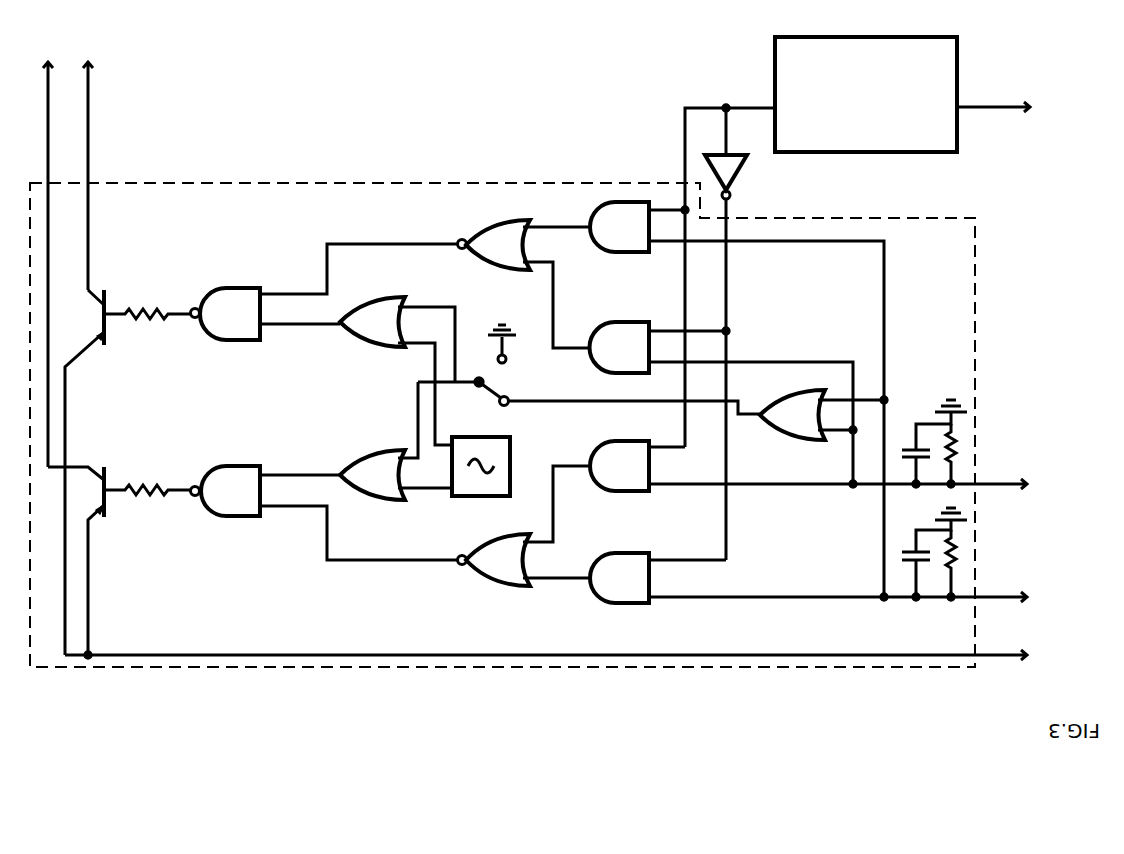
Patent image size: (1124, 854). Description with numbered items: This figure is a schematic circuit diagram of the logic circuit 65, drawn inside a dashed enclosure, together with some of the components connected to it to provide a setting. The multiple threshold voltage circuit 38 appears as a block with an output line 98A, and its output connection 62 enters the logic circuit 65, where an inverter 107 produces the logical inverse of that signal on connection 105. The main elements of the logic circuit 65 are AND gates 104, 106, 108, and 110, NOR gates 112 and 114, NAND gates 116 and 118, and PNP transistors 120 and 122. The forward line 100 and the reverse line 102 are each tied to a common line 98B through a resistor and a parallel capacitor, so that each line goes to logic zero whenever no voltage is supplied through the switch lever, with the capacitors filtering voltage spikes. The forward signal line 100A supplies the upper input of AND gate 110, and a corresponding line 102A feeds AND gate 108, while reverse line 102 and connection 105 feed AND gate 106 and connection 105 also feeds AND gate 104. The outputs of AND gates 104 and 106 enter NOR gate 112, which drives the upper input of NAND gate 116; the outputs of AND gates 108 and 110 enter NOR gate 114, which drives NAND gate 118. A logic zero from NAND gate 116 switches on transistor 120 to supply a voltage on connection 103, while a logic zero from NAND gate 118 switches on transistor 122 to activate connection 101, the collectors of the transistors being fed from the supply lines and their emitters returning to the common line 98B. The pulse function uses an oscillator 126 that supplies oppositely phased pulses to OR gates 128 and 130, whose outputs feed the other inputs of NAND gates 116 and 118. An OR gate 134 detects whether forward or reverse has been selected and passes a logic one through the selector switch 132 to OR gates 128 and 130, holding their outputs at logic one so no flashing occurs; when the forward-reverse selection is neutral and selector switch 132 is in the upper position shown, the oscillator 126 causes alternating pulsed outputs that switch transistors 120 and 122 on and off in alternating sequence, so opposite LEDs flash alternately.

The control unit 38 is at (957, 140).
The connection 62 is at (685, 108).
The logic circuit 65 is at (975, 258).
The output line 98A is at (985, 107).
The ground line 98B is at (283, 655).
The forward line 100 is at (985, 600).
The forward signal line 100A is at (800, 243).
The connection 101 is at (88, 88).
The reverse line 102 is at (985, 480).
The signal line 102A is at (790, 360).
The connection 103 is at (48, 68).
The AND gate 104 is at (628, 590).
The connection 105 is at (726, 285).
The AND gate 106 is at (628, 480).
The inverter 107 is at (735, 165).
The AND gate 108 is at (628, 360).
The AND gate 110 is at (628, 240).
The NOR gate 112 is at (505, 572).
The NOR gate 114 is at (500, 258).
The NAND gate 116 is at (245, 506).
The NAND gate 118 is at (245, 330).
The PNP transistor 120 is at (108, 505).
The PNP transistor 122 is at (108, 328).
The oscillator 126 is at (492, 496).
The OR gate 128 is at (390, 496).
The OR gate 130 is at (388, 343).
The selector switch 132 is at (510, 393).
The OR gate 134 is at (800, 425).